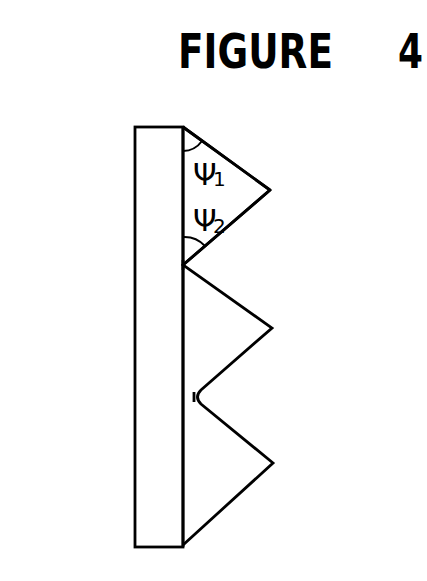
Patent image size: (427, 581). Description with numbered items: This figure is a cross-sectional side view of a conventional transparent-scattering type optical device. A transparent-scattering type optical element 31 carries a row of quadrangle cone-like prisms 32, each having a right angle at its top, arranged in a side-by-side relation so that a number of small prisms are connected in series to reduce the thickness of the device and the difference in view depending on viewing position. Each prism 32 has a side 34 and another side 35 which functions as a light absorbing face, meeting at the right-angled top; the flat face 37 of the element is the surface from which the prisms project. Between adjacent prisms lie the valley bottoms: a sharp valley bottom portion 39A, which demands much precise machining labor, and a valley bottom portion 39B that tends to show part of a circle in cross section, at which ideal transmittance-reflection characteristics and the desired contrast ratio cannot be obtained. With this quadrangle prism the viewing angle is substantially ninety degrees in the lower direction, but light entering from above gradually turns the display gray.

The transparent-scattering type optical element 31 is at (137, 498).
The quadrangle cone-like prism 32 is at (237, 158).
The side of the prism 34 is at (255, 210).
The light absorbing face 35 is at (255, 180).
The substrate surface 37 is at (182, 195).
The sharp valley bottom portion 39A is at (185, 265).
The circular valley bottom portion 39B is at (187, 400).